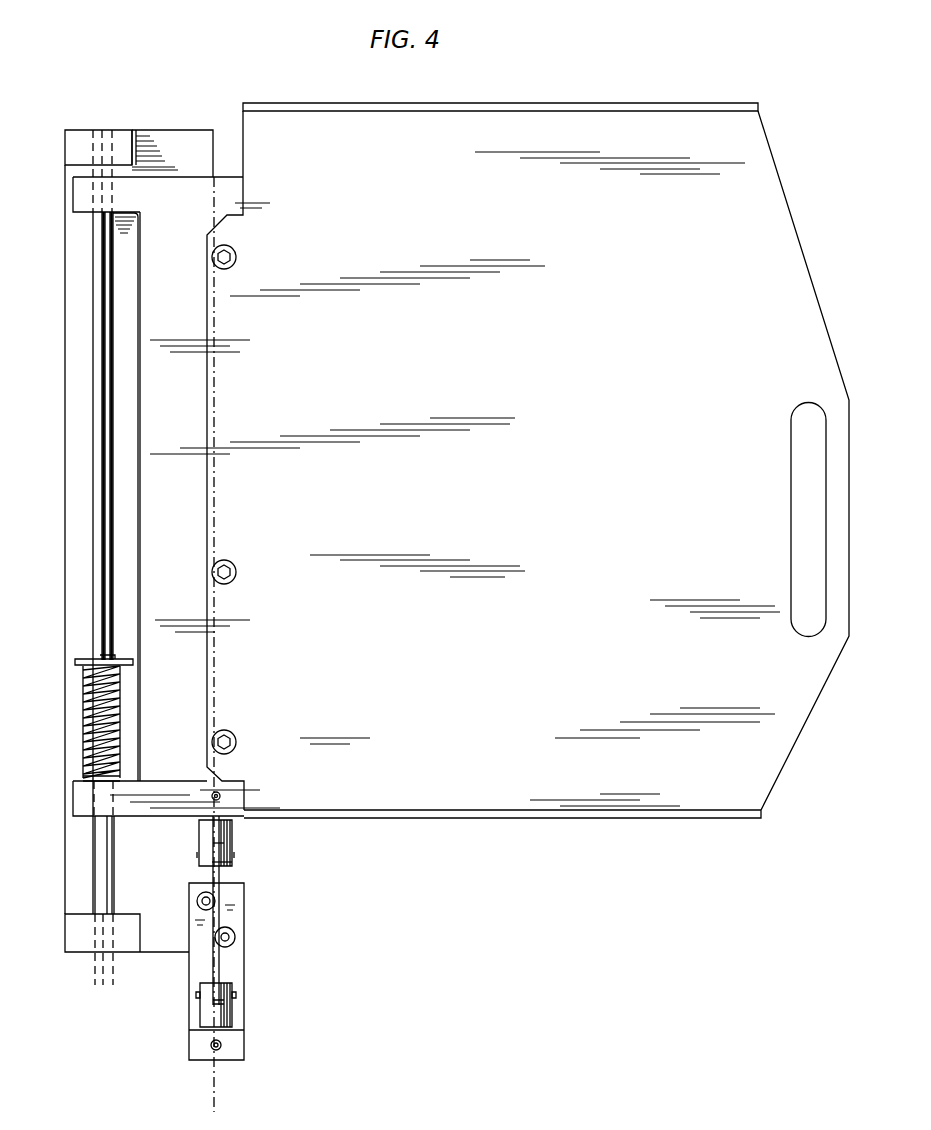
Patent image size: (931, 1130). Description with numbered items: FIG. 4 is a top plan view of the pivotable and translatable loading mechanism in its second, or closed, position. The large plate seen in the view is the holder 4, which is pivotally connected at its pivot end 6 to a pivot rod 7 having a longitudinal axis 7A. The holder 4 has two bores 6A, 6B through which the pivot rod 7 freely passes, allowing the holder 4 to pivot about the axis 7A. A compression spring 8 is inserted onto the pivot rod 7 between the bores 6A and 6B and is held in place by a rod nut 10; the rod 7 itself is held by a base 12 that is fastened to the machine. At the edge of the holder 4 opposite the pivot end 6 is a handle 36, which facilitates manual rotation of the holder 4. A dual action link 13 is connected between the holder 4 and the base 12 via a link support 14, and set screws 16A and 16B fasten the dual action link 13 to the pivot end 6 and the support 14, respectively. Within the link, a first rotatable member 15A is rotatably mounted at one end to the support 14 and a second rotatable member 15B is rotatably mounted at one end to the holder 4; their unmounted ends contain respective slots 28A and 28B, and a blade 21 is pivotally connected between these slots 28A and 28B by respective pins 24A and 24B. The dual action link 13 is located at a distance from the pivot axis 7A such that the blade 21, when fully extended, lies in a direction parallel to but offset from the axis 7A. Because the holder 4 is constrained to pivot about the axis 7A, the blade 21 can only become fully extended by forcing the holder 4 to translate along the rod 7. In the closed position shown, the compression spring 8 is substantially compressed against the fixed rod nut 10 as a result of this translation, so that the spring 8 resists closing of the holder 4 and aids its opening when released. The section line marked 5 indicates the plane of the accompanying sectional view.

The holder 4 is at (356, 125).
The section line 5- 5 is at (178, 768).
The pivot end 6 is at (190, 185).
The bore 6A is at (88, 790).
The bore 6B is at (88, 140).
The pivot rod 7 is at (97, 365).
The longitudinal axis 7A is at (101, 128).
The compression spring 8 is at (82, 710).
The rod nut 10 is at (93, 660).
The base 12 is at (75, 290).
The dual action link 13 is at (291, 915).
The link support 14 is at (243, 1032).
The first rotatable member 15A is at (235, 1020).
The second rotatable member 15B is at (233, 832).
The set screw 16A is at (211, 1046).
The set screw 16B is at (212, 798).
The blade 21 is at (229, 942).
The pin 24A is at (196, 995).
The pin 24B is at (233, 860).
The slot 28A is at (233, 1000).
The slot 28B is at (233, 847).
The handle 36 is at (823, 418).